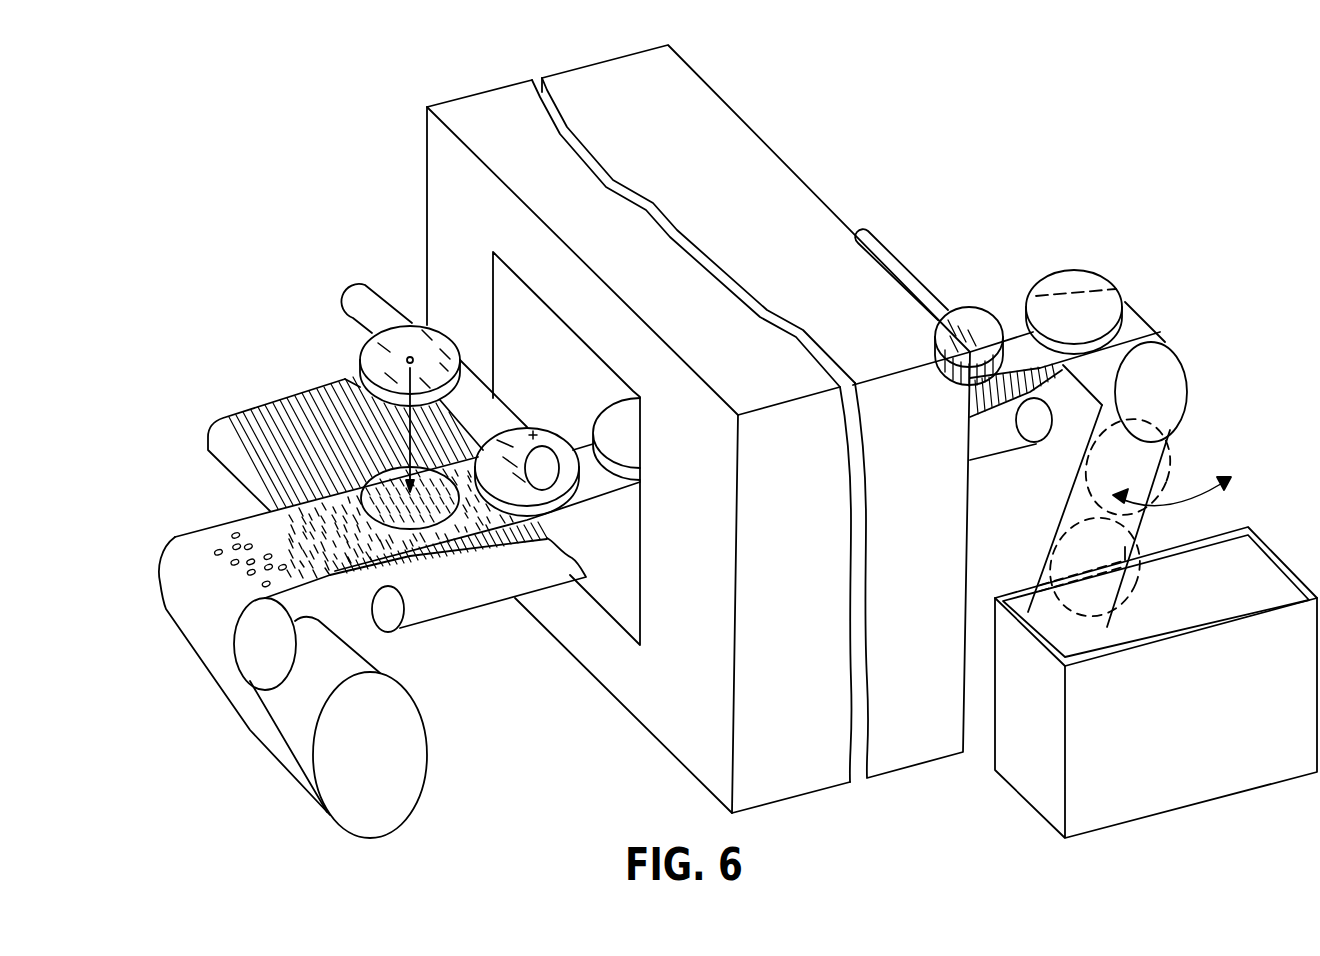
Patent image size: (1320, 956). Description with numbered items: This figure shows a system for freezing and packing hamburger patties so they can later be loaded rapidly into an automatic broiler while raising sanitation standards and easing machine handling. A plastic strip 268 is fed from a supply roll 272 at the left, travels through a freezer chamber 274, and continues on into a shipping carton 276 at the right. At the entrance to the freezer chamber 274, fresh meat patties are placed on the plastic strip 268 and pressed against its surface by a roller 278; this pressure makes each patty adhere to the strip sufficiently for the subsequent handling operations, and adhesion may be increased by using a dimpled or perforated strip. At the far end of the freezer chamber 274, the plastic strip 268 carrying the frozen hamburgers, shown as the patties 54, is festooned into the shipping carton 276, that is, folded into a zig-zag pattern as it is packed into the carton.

The absorbent article / pad 54 is at (1122, 300).
The plastic strip 268 is at (176, 542).
The supply roll 272 is at (417, 684).
The freezer chamber 274 is at (777, 156).
The shipping carton 276 is at (1248, 527).
The roller 278 is at (383, 296).